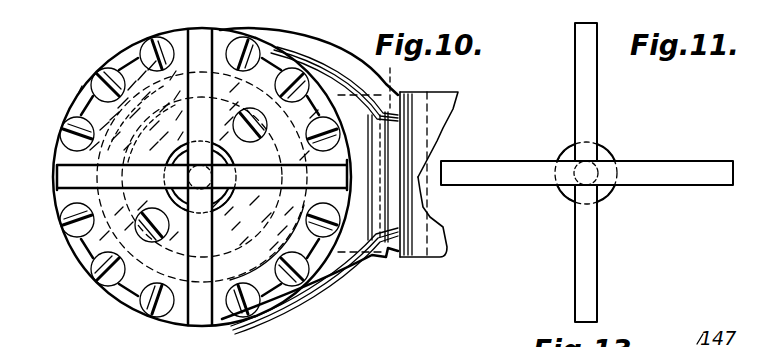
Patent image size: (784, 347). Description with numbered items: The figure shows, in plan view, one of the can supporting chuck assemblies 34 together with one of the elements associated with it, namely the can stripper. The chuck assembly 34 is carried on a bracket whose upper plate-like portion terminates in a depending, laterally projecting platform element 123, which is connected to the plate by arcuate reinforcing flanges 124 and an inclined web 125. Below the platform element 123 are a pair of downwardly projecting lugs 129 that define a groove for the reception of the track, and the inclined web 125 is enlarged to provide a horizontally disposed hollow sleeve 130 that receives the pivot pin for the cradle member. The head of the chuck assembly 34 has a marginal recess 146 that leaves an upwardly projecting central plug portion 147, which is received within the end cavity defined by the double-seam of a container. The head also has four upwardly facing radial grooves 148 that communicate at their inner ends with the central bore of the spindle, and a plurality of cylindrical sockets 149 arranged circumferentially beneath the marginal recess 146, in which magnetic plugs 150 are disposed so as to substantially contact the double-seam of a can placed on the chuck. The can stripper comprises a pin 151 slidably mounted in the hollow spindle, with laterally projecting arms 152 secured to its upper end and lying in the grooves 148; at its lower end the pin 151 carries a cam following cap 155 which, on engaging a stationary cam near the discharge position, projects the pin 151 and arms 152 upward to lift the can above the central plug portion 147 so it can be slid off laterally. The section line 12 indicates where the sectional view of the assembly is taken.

In FIG. 10, the section line 12- 12 is at (57, 188).
In FIG. 10, the chuck assembly 34 is at (70, 89).
In FIG. 10, the platform element 123 is at (343, 303).
In FIG. 10, the arcuate reinforcing flanges 124 is at (340, 45).
In FIG. 10, the inclined web 125 is at (412, 260).
In FIG. 10, the downwardly projecting lugs 129 is at (392, 88).
In FIG. 10, the hollow sleeve 130 is at (418, 92).
In FIG. 10, the marginal recess 146 is at (62, 208).
In FIG. 10, the central plug portion 147 is at (131, 56).
In FIG. 10, the radial grooves 148 is at (204, 159).
In FIG. 10, the cylindrical sockets 149 is at (266, 224).
In FIG. 10, the magnetic plugs 150 is at (62, 138).
In FIG. 10, the pin 151 is at (186, 178).
In FIG. 11, the pin 151 is at (598, 164).
In FIG. 10, the arms 152 is at (165, 318).
In FIG. 11, the arms 152 is at (590, 99).
In FIG. 10, the cam following cap 155 is at (200, 177).
In FIG. 11, the cam following cap 155 is at (568, 195).